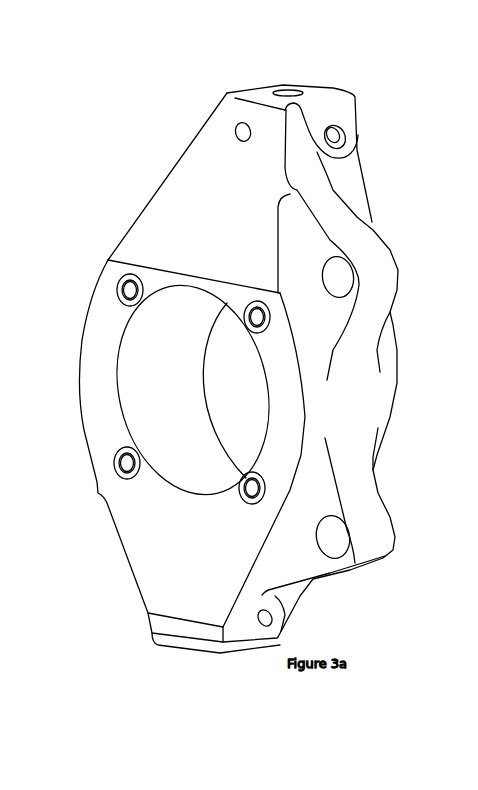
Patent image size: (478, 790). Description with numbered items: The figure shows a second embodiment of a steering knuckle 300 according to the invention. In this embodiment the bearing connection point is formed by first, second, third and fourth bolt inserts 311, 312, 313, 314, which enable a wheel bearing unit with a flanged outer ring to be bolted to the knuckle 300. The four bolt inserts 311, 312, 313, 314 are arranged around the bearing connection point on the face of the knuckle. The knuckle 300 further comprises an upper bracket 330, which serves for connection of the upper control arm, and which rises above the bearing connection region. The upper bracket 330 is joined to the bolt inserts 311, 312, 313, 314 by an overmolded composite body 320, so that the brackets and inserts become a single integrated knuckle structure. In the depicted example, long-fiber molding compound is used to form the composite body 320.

The steering knuckle 300 is at (254, 369).
The first bolt insert 311 is at (130, 275).
The second bolt insert 312 is at (257, 302).
The third bolt insert 313 is at (257, 488).
The fourth bolt insert 314 is at (118, 466).
The overmolded composite body 320 is at (183, 548).
The upper bracket 330 is at (317, 100).